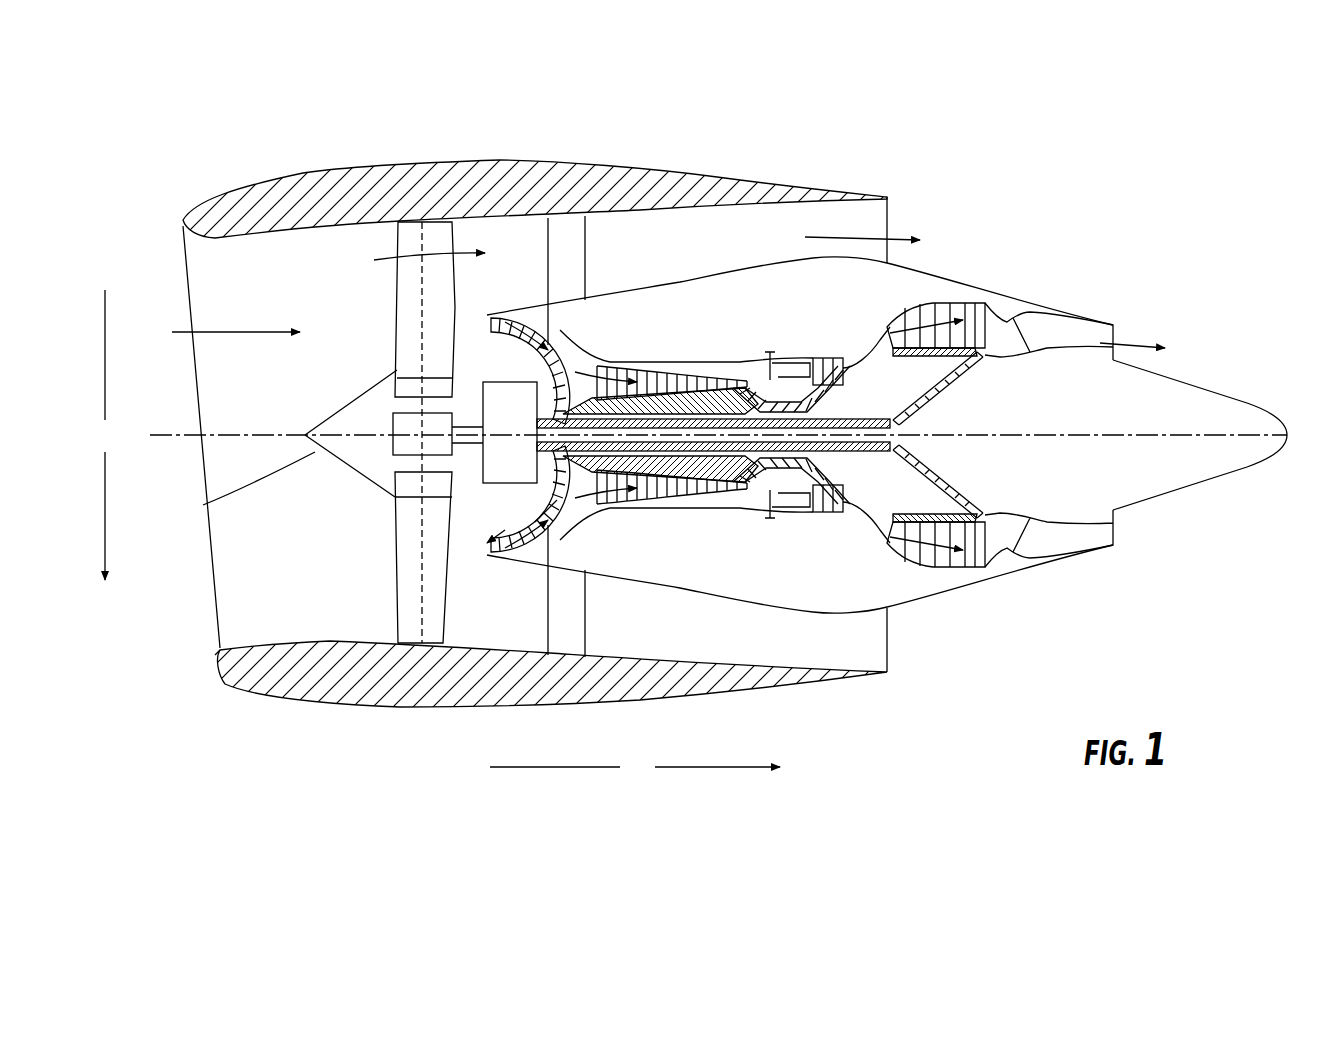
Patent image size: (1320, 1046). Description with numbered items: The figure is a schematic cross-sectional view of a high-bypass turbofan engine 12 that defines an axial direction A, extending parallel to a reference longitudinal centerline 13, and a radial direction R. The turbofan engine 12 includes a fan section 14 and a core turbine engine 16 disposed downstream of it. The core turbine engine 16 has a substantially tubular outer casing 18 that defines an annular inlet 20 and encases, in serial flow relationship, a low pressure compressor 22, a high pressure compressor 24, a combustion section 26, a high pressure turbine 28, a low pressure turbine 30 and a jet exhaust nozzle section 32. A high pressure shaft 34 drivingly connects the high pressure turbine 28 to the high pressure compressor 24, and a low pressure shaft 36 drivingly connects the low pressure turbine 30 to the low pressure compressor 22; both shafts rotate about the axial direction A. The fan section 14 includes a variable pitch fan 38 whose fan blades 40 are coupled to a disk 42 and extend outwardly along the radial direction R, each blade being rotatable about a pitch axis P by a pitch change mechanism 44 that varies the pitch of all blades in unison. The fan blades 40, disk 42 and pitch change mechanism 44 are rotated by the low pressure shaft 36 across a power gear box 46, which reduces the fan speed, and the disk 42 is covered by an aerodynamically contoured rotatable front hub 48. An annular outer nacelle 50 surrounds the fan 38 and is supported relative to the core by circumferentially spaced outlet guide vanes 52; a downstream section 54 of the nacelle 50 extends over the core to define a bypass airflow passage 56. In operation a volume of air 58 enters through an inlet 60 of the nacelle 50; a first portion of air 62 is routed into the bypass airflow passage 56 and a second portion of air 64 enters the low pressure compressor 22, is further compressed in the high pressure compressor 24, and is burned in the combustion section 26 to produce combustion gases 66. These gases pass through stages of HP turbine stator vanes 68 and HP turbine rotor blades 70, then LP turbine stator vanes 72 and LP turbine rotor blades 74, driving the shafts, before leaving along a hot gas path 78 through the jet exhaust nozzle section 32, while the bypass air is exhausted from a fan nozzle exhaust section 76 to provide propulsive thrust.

The turbofan engine 12 is at (1030, 176).
The longitudinal centerline 13 is at (1053, 435).
The fan section 14 is at (353, 248).
The core turbine engine 16 is at (705, 315).
The outer casing 18 is at (742, 600).
The annular inlet 20 is at (487, 555).
The low pressure compressor 22 is at (535, 490).
The high pressure compressor 24 is at (612, 490).
The combustion section 26 is at (786, 497).
The high pressure turbine 28 is at (900, 500).
The low pressure turbine 30 is at (973, 565).
The jet exhaust nozzle section 32 is at (1031, 543).
The high pressure shaft 34 is at (823, 408).
The low pressure shaft 36 is at (938, 388).
The variable pitch fan 38 is at (363, 485).
The fan blades 40 is at (395, 582).
The disk 42 is at (413, 388).
The pitch change mechanism 44 is at (395, 417).
The power gear box 46 is at (520, 397).
The front hub 48 is at (203, 505).
The outer nacelle 50 is at (443, 707).
The outlet guide vanes 52 is at (586, 243).
The downstream section 54 is at (848, 232).
The bypass airflow passage 56 is at (736, 253).
The volume of air 58 is at (237, 332).
The inlet 60 is at (217, 652).
The first portion of air 62 is at (412, 265).
The second portion of air 64 is at (487, 345).
The combustion gases 66 is at (932, 318).
The HP turbine stator vanes 68 is at (803, 512).
The HP turbine rotor blades 70 is at (893, 468).
The LP turbine stator vanes 72 is at (893, 548).
The LP turbine rotor blades 74 is at (905, 553).
The fan nozzle exhaust section 76 is at (877, 220).
The hot gas path 78 is at (877, 343).
The pitch axis P is at (423, 242).
The radial direction R is at (105, 435).
The axial direction A is at (635, 768).